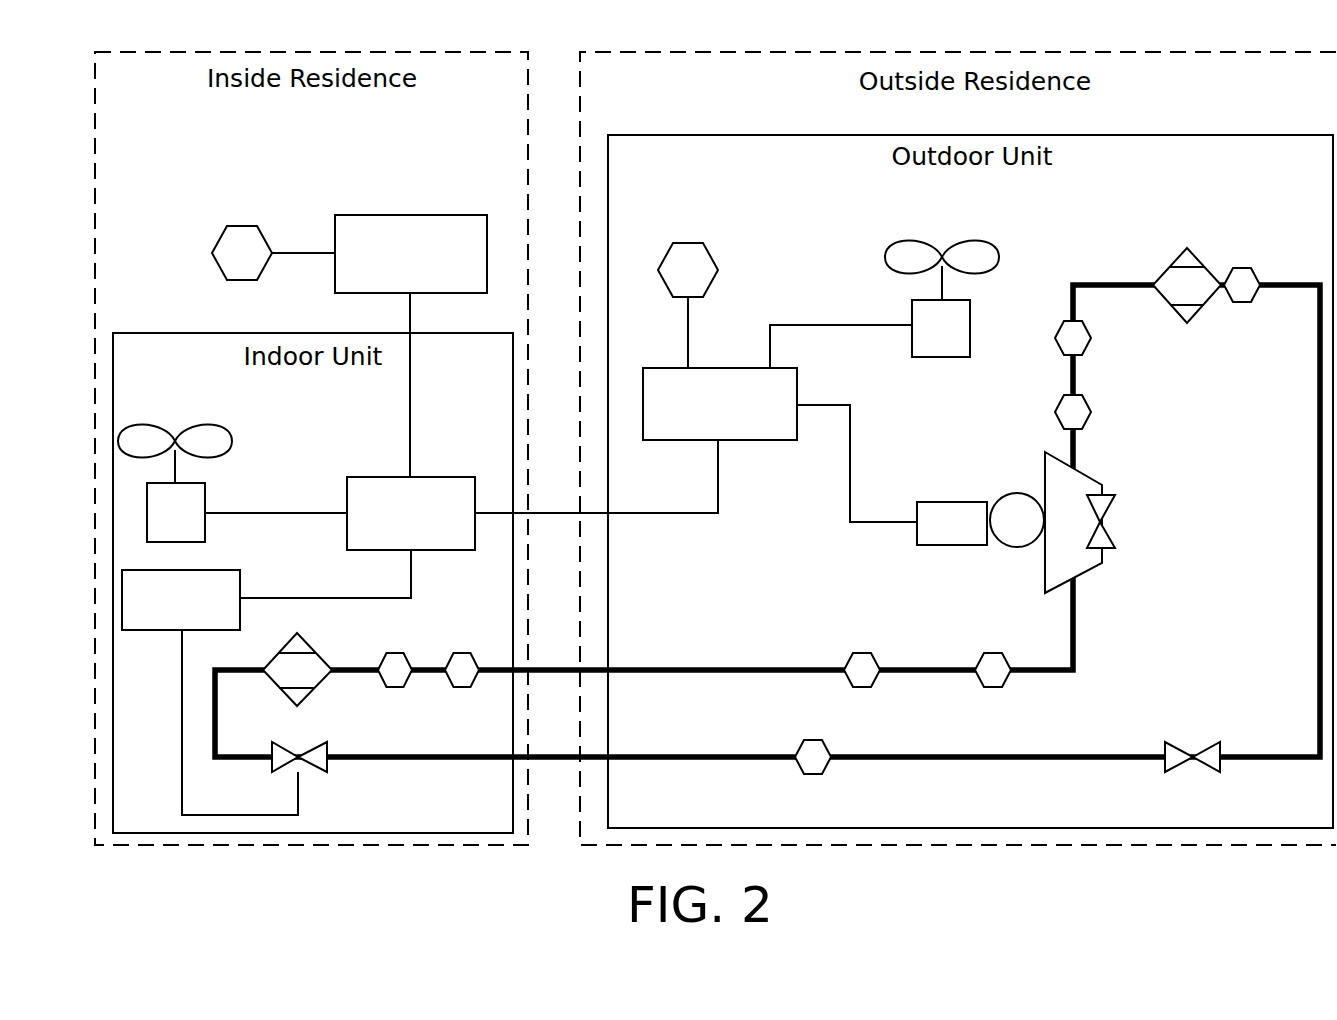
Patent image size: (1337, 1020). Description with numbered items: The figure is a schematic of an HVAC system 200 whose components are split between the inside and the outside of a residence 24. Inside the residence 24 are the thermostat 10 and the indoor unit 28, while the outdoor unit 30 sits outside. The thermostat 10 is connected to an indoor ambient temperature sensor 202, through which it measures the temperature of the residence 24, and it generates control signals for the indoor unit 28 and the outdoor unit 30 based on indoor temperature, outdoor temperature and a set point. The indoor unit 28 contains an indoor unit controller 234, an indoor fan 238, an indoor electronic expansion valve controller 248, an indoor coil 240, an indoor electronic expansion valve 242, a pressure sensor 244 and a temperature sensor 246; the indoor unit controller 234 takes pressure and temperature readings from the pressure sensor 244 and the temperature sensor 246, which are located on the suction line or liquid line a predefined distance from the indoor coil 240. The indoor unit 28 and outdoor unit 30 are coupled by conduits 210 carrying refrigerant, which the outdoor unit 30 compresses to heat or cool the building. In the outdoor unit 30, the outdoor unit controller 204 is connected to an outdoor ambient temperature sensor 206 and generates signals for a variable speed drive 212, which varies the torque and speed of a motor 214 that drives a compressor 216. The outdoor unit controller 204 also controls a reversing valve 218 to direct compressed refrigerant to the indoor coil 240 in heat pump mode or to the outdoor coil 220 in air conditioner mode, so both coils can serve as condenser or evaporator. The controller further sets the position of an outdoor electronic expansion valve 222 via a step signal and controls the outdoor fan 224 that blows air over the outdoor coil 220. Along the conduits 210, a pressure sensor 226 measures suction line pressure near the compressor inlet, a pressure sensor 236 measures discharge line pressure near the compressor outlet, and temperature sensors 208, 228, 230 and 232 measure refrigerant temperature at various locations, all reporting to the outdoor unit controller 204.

The HVAC system 200 is at (1226, 36).
The residence 24 is at (428, 55).
The indoor unit 28 is at (118, 335).
The outdoor unit 30 is at (778, 141).
The thermostat 10 is at (374, 216).
The indoor ambient temperature sensor 202 is at (224, 243).
The indoor unit controller 234 is at (418, 478).
The indoor fan 238 is at (198, 527).
The indoor electronic expansion valve controller 248 is at (233, 592).
The indoor coil 240 is at (266, 676).
The pressure sensor 244 is at (387, 686).
The temperature sensor 246 is at (452, 653).
The indoor electronic expansion valve 242 is at (279, 764).
The outdoor ambient temperature sensor 206 is at (712, 253).
The outdoor unit controller 204 is at (705, 442).
The outdoor fan 224 is at (923, 357).
The variable speed drive 212 is at (940, 547).
The motor 214 is at (1027, 548).
The compressor 216 is at (1087, 484).
The reversing valve 218 is at (1105, 552).
The pressure sensor 236 is at (1061, 330).
The temperature sensor 232 is at (1065, 400).
The outdoor coil 220 is at (1190, 312).
The temperature sensor 208 is at (1240, 302).
The conduits 210 is at (1076, 641).
The pressure sensor 226 is at (866, 655).
The temperature sensor 228 is at (995, 658).
The temperature sensor 230 is at (808, 746).
The outdoor electronic expansion valve 222 is at (1172, 748).